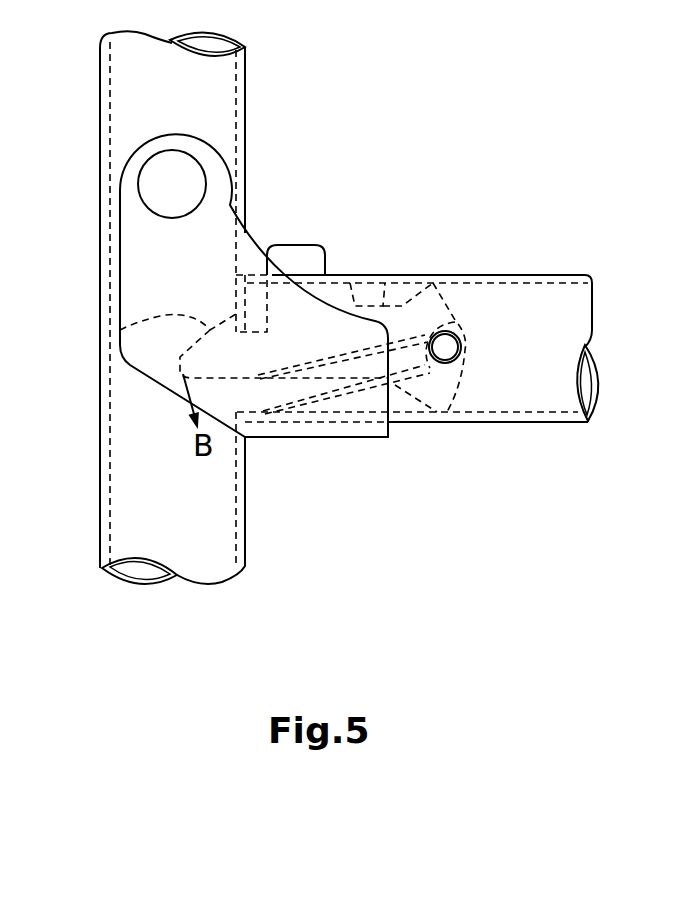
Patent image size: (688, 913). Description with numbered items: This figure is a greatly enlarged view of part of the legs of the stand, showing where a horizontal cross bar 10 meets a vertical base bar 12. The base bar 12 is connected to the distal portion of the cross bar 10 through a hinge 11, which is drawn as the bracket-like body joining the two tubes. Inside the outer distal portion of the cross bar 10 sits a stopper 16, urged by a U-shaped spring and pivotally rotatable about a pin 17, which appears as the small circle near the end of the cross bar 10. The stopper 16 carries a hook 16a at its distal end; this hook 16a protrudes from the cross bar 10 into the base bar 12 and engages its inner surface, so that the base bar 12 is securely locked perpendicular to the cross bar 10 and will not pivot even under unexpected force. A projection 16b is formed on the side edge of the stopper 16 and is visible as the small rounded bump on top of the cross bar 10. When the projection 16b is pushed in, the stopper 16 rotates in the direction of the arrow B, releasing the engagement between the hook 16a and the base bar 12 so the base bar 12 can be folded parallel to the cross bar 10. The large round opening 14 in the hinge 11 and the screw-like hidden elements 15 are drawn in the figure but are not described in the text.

The cross bar 10 is at (510, 275).
The hinge 11 is at (297, 437).
The base bar 12 is at (100, 520).
The mounting hole 14 is at (184, 167).
The screws 15 is at (362, 385).
The stopper 16 is at (389, 273).
The hook 16a is at (120, 330).
The projection 16b is at (295, 245).
The pin 17 is at (445, 350).